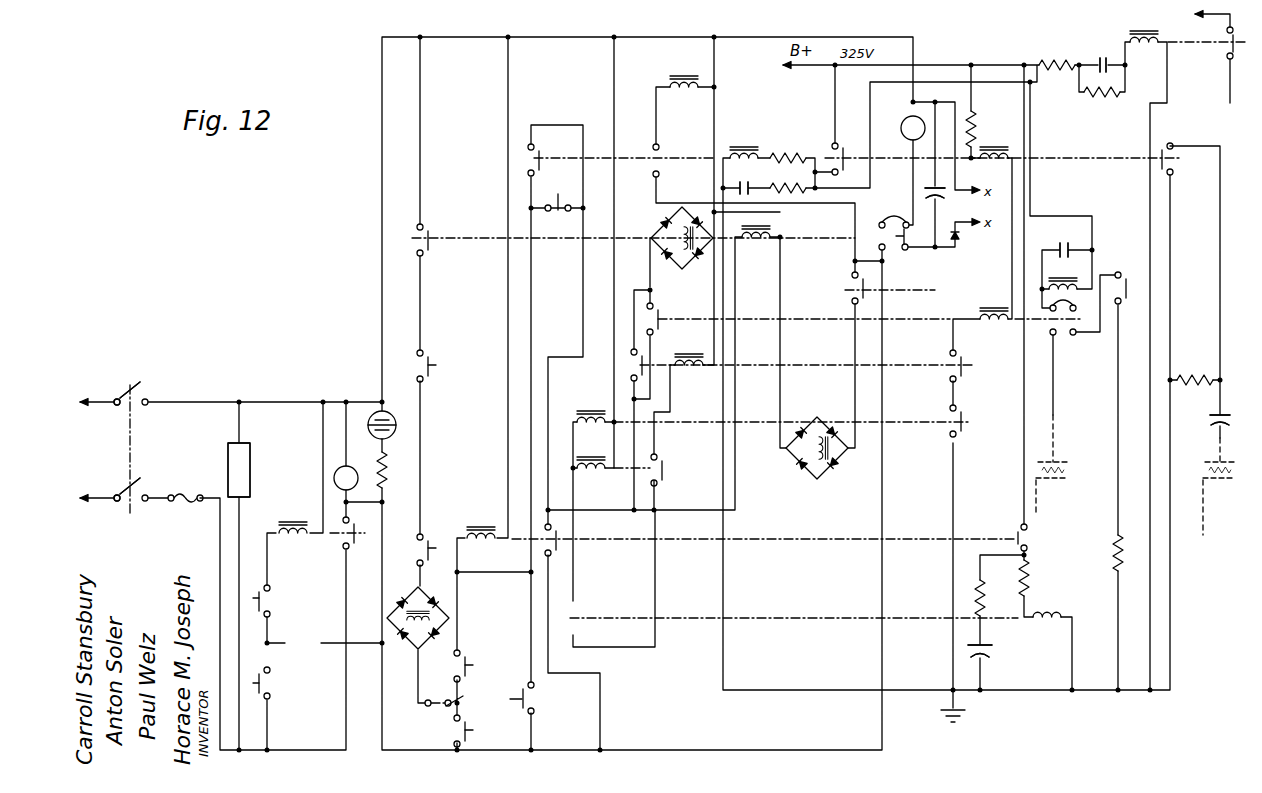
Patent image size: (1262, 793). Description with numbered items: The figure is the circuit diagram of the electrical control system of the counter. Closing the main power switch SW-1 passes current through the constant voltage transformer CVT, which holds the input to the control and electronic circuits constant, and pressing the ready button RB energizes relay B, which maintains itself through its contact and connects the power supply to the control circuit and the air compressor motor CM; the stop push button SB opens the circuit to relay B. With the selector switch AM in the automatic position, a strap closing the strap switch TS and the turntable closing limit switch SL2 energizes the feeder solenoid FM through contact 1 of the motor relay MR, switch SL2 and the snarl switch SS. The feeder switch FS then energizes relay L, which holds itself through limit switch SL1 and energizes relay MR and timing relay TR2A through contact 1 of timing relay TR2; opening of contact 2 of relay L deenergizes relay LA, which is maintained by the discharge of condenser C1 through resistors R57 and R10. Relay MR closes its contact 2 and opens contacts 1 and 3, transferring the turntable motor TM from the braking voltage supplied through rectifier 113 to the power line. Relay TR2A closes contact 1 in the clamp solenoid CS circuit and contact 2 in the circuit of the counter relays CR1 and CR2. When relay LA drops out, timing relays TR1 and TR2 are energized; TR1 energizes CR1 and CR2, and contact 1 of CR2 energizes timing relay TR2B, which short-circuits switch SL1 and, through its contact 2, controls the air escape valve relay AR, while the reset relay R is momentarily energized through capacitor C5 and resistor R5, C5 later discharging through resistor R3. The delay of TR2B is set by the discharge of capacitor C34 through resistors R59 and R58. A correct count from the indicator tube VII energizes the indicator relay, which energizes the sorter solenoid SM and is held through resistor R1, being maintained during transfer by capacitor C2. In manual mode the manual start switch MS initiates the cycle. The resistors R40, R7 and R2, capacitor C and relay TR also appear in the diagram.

The main power switch SW-1 is at (143, 437).
The constant voltage transformer CVT is at (250, 461).
The air compressor motor CM is at (340, 503).
The resistor R40 is at (391, 449).
The relay B is at (293, 519).
The stop push button SB is at (257, 601).
The ready button RB is at (256, 683).
The snarl switch SS is at (411, 550).
The feeder solenoid FM is at (416, 610).
The selector switch AM is at (447, 705).
The feeder switch FS is at (452, 666).
The strap switch TS is at (487, 729).
The manual start switch MS is at (513, 698).
The relay L is at (481, 543).
The limit switch SL1 is at (547, 168).
The limit switch SL2 is at (435, 369).
The air escape valve relay AR is at (675, 126).
The clamp solenoid CS is at (655, 236).
The motor relay MR is at (756, 240).
The timing relay TR2B is at (742, 147).
The capacitor C34 is at (744, 181).
The resistor R58 is at (788, 149).
The resistor R59 is at (788, 182).
The turntable motor TM is at (902, 124).
The condenser C1 is at (955, 419).
The resistor R7 is at (981, 127).
The counter relay CR2 is at (992, 144).
The rectifier 113 is at (960, 238).
The resistor R5 is at (1057, 54).
The capacitor C5 is at (1105, 55).
The resistor R3 is at (1102, 101).
The reset relay R is at (1144, 47).
The capacitor C2 is at (1071, 240).
The timing relay TR is at (1071, 292).
The counter relay CR1 is at (991, 308).
The sorter solenoid SM is at (823, 448).
The indicator tube VII is at (1059, 464).
The resistor R2 is at (1195, 391).
The capacitor C is at (1222, 445).
The resistor R10 is at (1037, 578).
The resistor R57 is at (993, 598).
The relay LA is at (1045, 628).
The resistor R1 is at (1127, 553).
The timing relay TR1 is at (591, 411).
The timing relay TR2 is at (591, 457).
The timing relay TR2A is at (691, 374).
The contact 1 is at (741, 355).
The contact 2 is at (910, 346).
The contact 3 is at (905, 229).